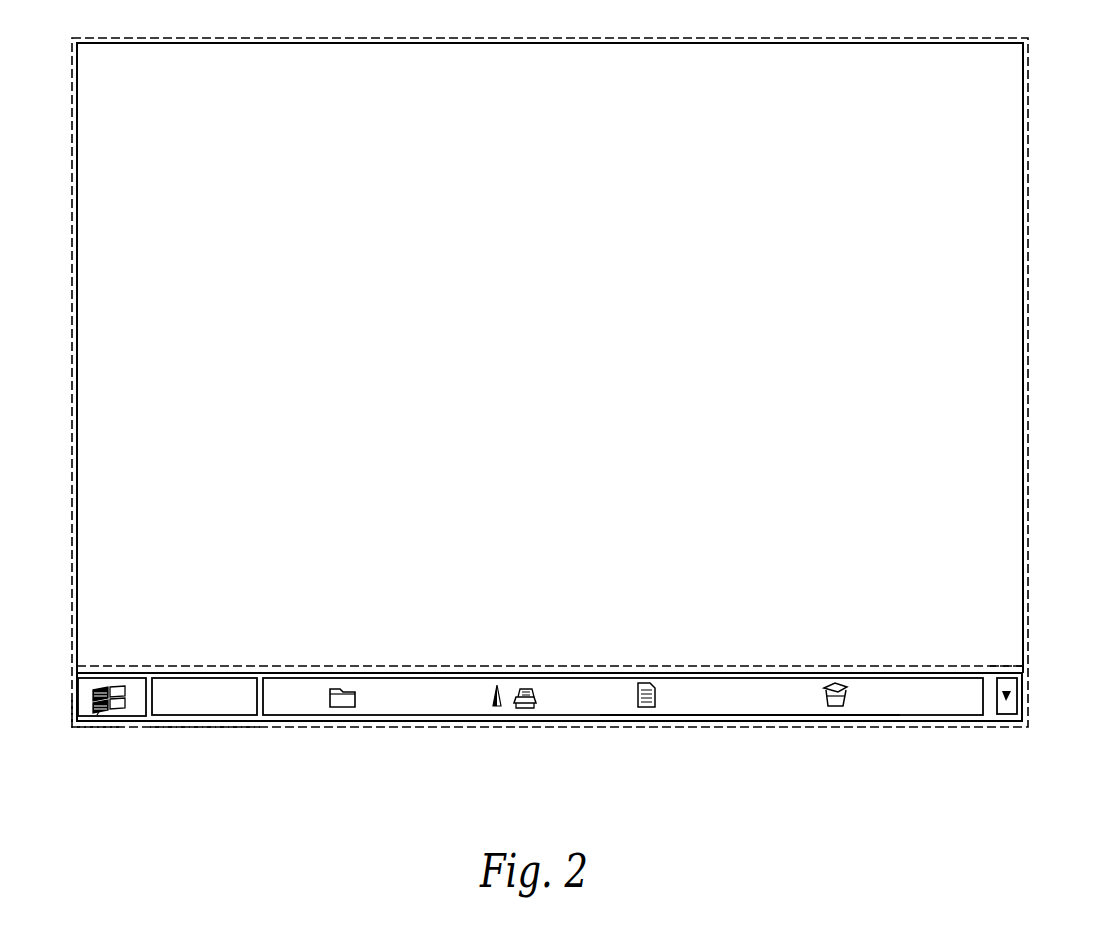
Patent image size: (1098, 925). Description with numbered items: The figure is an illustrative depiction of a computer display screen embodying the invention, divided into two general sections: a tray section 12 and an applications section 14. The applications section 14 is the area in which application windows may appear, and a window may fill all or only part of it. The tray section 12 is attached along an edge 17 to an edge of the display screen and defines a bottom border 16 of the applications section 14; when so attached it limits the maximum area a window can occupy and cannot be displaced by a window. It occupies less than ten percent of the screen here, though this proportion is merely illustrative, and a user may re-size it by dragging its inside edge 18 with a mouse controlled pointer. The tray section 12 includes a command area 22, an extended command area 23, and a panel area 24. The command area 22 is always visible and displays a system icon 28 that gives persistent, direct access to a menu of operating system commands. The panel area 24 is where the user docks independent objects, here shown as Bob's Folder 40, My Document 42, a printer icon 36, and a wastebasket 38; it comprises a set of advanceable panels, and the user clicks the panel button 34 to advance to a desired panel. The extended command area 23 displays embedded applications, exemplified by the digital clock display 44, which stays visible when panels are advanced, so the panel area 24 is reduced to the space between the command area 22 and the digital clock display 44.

The tray section 12 is at (437, 727).
The applications section 14 is at (1027, 497).
The bottom border 16 is at (1002, 680).
The edge 17 is at (733, 720).
The inside edge 18 is at (493, 706).
The command area 22 is at (72, 708).
The extended command area 23 is at (195, 730).
The panel area 24 is at (288, 710).
The system icon 28 is at (105, 705).
The panel button 34 is at (1010, 708).
The printer icon 36 is at (513, 703).
The wastebasket 38 is at (902, 707).
The Bob's Folder 40 is at (337, 702).
The My Document 42 is at (642, 702).
The digital clock display 44 is at (210, 713).